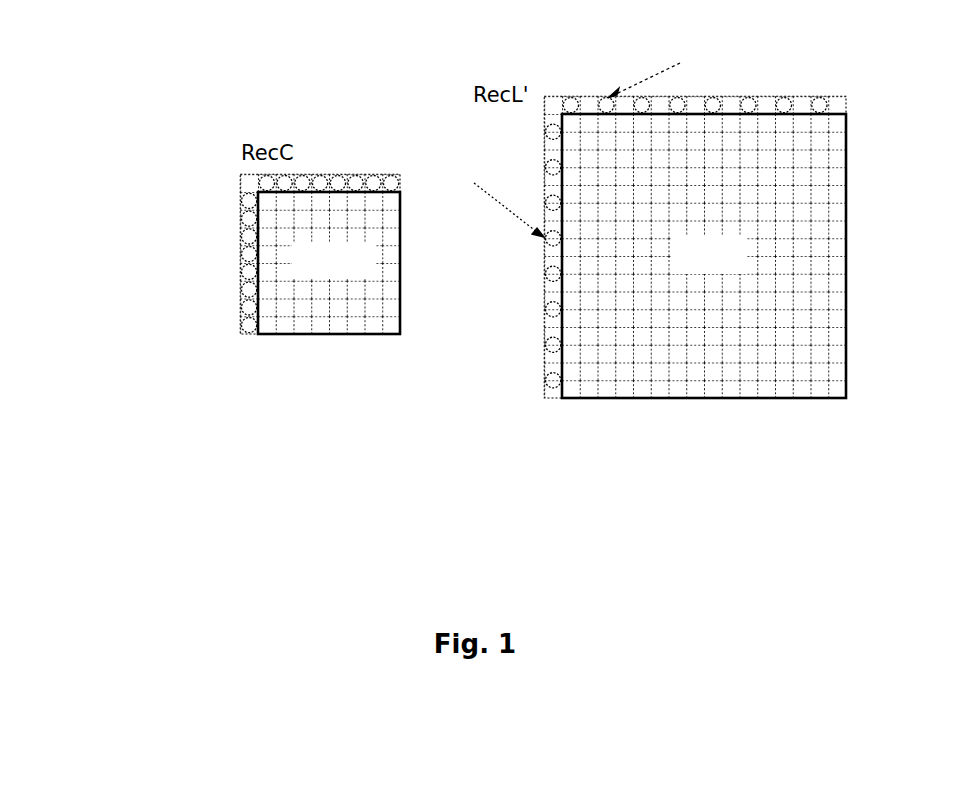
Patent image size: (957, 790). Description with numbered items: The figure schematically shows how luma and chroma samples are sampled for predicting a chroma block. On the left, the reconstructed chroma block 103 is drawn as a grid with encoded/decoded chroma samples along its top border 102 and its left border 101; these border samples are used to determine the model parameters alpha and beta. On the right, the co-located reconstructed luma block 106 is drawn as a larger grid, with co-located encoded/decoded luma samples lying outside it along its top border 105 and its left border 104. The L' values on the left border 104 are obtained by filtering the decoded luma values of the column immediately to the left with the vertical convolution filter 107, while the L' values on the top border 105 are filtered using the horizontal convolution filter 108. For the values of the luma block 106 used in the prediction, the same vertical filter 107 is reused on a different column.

The left border of the chroma block 101 is at (241, 262).
The top border of the chroma block 102 is at (317, 174).
The reconstructed chroma block RecC 103 is at (327, 342).
The left border of the co-located luma block 104 is at (543, 379).
The top border of the co-located luma block 105 is at (847, 106).
The co-located luma block 106 is at (847, 235).
The vertical convolution filter 107 is at (465, 183).
The horizontal convolution filter 108 is at (776, 43).